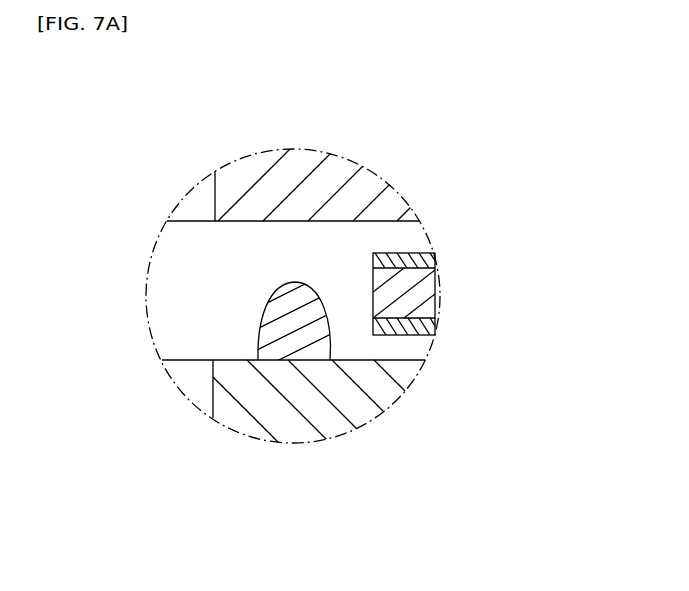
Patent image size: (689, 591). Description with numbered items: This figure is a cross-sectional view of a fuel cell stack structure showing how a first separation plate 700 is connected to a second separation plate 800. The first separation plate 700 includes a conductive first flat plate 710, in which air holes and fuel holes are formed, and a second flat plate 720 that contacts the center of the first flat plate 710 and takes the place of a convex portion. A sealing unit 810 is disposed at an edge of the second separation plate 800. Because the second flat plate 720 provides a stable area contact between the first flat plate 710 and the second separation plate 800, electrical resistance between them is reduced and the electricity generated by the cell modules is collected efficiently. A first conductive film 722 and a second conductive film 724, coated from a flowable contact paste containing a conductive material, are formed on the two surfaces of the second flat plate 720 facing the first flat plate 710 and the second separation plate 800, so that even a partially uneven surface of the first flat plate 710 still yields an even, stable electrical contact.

The first separation plate 700 is at (432, 182).
The first flat plate 710 is at (265, 180).
The second flat plate 720 is at (436, 286).
The first conductive film 722 is at (408, 253).
The second conductive film 724 is at (408, 335).
The second separation plate 800 is at (337, 420).
The sealing unit 810 is at (292, 300).